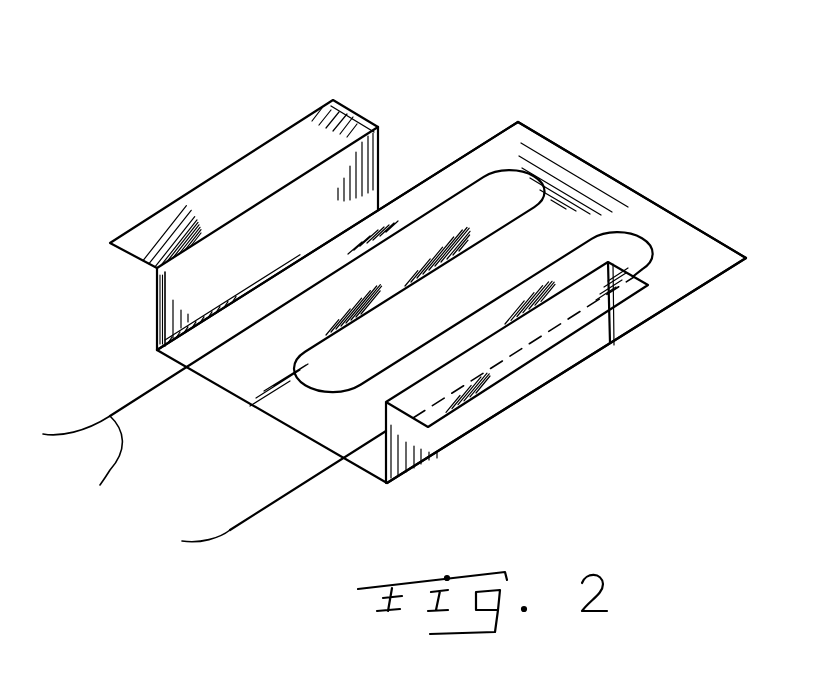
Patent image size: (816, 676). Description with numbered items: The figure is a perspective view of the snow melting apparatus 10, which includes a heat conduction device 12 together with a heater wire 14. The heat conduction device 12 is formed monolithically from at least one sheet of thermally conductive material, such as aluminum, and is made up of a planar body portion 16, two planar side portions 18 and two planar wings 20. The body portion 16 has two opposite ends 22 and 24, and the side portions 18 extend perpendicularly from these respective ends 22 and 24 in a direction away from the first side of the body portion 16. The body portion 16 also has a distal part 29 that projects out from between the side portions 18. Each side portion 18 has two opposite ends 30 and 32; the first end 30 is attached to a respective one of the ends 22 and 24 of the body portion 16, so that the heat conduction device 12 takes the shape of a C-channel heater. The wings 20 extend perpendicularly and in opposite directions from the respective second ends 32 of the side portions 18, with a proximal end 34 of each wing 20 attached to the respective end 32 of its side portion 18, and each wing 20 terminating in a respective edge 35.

The snow melting apparatus 10 is at (147, 153).
The heat conduction device 12 is at (605, 183).
The heater wire 14 is at (230, 530).
The planar body portion 16 is at (263, 395).
The planar side portion 18 is at (292, 253).
The planar wing 20 is at (257, 199).
The end of body portion 22 is at (476, 148).
The end of body portion 24 is at (688, 295).
The distal part 29 is at (670, 227).
The first end of side portion 30 is at (342, 232).
The second end of side portion 32 is at (187, 247).
The proximal end of wing 34 is at (313, 167).
The edge of wing 35 is at (353, 107).